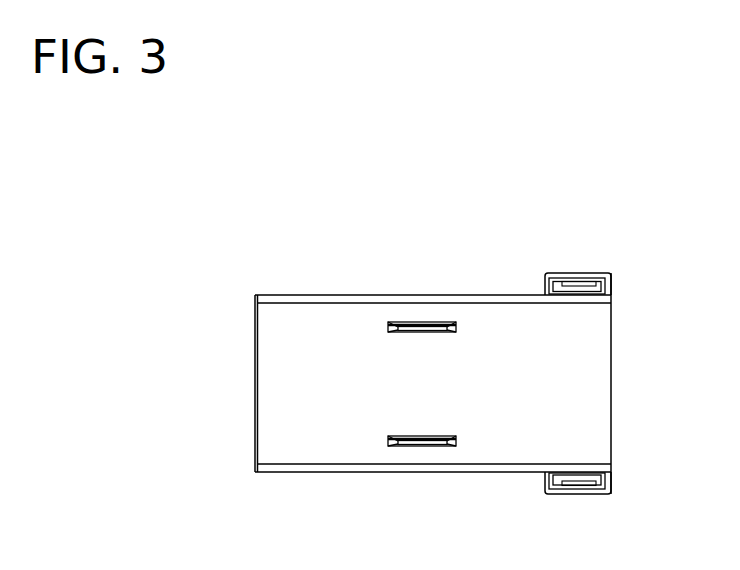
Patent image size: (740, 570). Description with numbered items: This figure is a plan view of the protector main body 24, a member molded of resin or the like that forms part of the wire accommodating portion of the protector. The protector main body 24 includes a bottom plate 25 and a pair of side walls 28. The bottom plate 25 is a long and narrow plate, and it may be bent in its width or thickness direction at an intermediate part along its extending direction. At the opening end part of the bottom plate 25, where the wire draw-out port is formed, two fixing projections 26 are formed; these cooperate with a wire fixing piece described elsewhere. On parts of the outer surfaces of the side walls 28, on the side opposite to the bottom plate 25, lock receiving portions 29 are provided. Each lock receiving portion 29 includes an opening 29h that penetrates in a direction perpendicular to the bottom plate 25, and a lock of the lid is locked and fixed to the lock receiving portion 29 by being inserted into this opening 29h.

The protector main body 24 is at (453, 257).
The bottom plate 25 is at (590, 391).
The fixing projections 26 is at (457, 332).
The side walls 28 is at (380, 295).
The lock receiving portions 29 is at (611, 277).
The opening 29h is at (601, 291).